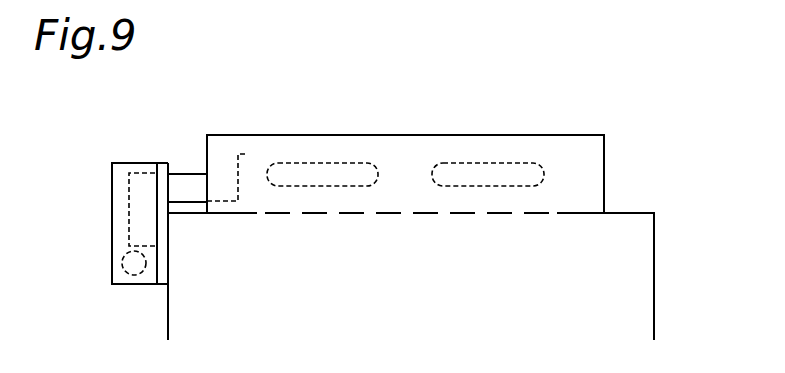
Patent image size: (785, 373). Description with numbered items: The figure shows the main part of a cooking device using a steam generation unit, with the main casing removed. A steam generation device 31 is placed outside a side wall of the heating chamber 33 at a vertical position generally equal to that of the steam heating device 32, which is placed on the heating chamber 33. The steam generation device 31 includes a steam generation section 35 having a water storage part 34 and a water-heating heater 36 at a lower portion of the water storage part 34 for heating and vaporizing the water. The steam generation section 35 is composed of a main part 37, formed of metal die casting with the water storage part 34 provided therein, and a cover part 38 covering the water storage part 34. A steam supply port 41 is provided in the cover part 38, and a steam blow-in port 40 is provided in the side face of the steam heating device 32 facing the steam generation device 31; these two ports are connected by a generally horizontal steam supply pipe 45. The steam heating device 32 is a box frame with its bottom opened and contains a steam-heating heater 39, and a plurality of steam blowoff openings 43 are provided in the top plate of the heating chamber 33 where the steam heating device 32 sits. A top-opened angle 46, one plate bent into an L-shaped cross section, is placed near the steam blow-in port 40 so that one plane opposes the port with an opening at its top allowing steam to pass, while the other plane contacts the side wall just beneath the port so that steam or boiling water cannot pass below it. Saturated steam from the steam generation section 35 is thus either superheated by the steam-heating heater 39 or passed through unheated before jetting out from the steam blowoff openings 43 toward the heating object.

The steam generation device 31 is at (86, 167).
The steam heating device 32 is at (605, 173).
The heating chamber 33 is at (655, 272).
The water storage part 34 is at (141, 201).
The steam generation section 35 is at (131, 153).
The water-heating heater 36 is at (135, 276).
The main part 37 is at (112, 257).
The cover part 38 is at (164, 272).
The steam-heating heater 39 is at (303, 163).
The steam blow-in port 40 is at (205, 181).
The steam supply port 41 is at (170, 183).
The steam blowoff openings 43 is at (297, 214).
The steam supply pipe 45 is at (185, 173).
The top-opened angle 46 is at (246, 154).